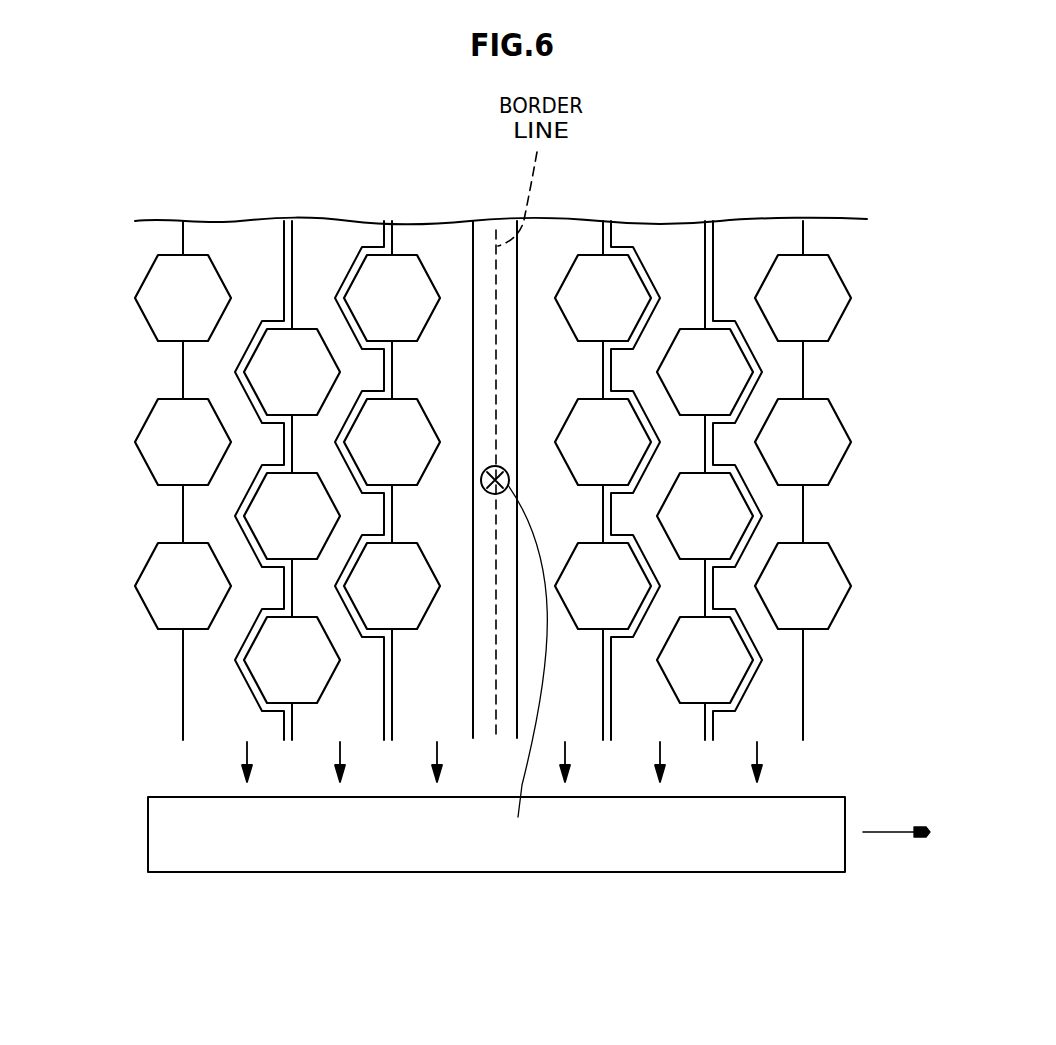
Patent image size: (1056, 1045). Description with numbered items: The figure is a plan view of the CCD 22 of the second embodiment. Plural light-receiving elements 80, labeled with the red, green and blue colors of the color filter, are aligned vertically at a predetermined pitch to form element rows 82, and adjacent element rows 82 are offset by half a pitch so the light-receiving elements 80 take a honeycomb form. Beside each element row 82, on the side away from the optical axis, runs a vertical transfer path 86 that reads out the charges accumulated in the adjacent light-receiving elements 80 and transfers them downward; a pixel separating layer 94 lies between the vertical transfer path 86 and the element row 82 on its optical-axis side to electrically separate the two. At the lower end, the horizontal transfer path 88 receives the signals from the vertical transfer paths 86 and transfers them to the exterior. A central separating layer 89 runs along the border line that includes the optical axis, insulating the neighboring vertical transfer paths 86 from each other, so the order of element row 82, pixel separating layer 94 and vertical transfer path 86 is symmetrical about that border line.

The CCD 22 is at (955, 227).
The light-receiving element 80 is at (157, 288).
The element row 82 is at (189, 203).
The vertical transfer path 86 is at (234, 712).
The horizontal transfer path 88 is at (746, 855).
The central separating layer 89 is at (485, 232).
The pixel separating layer 94 is at (283, 223).